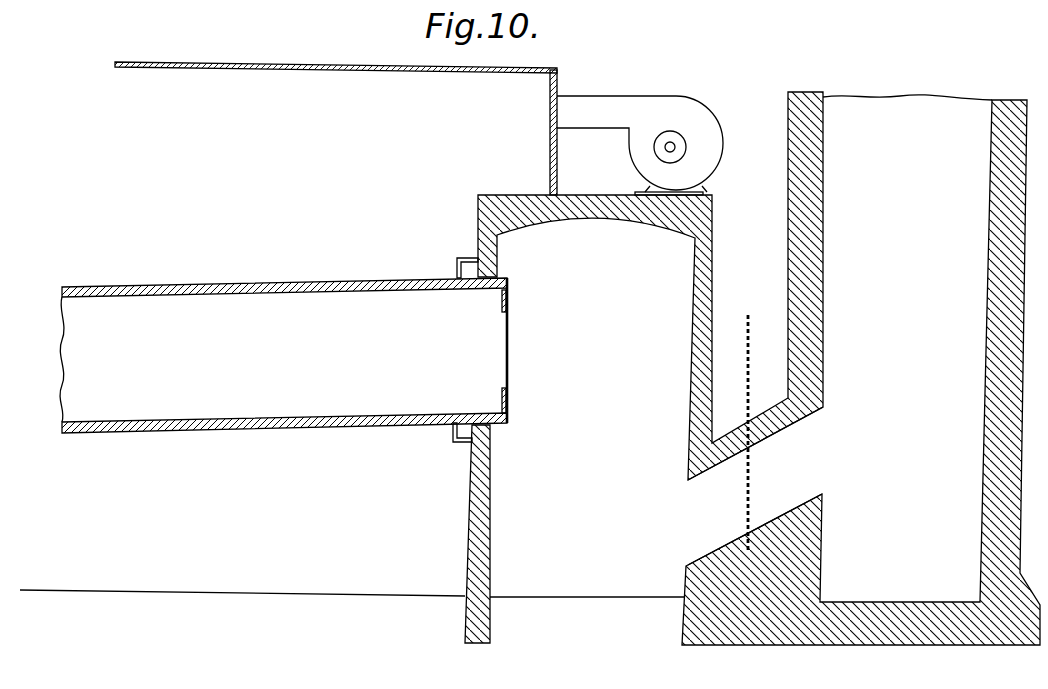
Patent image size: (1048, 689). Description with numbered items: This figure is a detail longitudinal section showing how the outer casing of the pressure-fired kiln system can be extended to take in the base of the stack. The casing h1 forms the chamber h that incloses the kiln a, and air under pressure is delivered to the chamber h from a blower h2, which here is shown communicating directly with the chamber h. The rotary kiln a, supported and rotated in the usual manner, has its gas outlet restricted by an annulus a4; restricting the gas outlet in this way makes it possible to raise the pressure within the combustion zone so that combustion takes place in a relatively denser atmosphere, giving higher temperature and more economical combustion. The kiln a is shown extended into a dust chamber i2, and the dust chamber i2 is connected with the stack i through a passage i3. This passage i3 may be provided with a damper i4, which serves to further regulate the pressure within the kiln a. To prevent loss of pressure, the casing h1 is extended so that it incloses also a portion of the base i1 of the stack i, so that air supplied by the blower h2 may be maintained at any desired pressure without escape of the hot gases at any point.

The chamber h is at (404, 132).
The casing h1 is at (332, 68).
The blower h2 is at (693, 115).
The rotary kiln a is at (297, 268).
The annulus a4 is at (509, 296).
The stack i is at (992, 222).
The base of the stack i1 is at (712, 270).
The dust chamber i2 is at (565, 412).
The passage i3 is at (755, 486).
The damper i4 is at (744, 502).